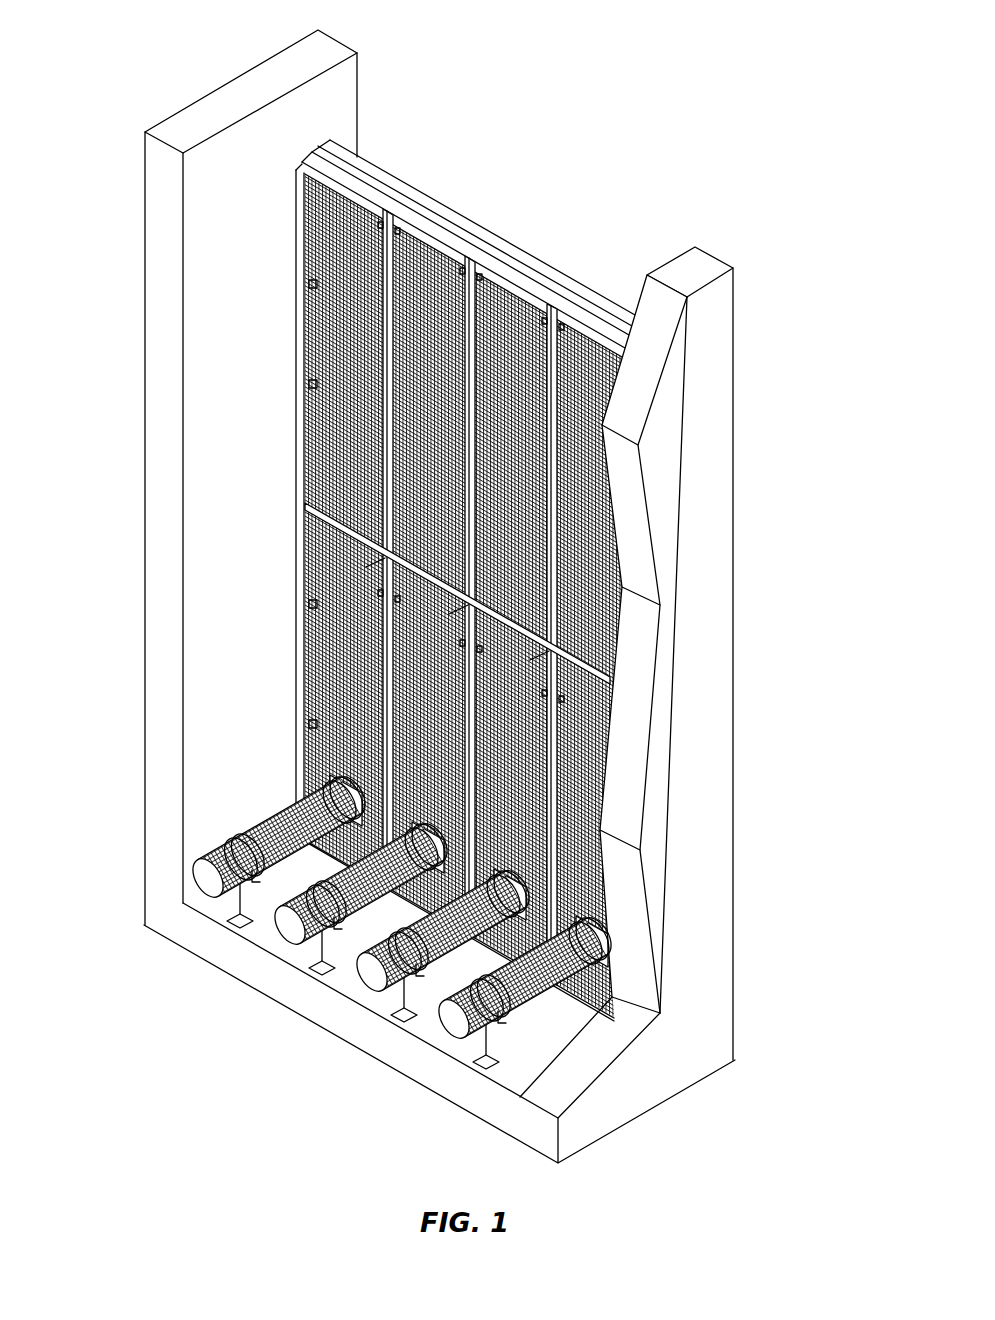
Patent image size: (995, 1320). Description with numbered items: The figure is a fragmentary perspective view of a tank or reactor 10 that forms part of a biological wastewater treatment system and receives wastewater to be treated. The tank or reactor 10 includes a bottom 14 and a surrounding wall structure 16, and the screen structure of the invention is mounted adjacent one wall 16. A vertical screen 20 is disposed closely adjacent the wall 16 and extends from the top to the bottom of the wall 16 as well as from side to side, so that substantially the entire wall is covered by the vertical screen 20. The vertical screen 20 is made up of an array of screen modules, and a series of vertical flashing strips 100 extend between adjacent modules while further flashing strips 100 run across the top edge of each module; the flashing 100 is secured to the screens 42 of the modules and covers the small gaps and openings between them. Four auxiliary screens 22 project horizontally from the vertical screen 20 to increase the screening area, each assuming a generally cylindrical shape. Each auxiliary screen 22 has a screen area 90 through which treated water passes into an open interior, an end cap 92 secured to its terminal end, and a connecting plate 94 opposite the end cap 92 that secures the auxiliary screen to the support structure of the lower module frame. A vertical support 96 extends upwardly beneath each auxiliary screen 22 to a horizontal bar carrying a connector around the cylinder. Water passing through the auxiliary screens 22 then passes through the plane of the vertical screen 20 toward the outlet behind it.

The tank or reactor 10 is at (652, 116).
The bottom 14 is at (267, 937).
The wall structure 16 is at (227, 275).
The vertical screen 20 is at (250, 435).
The auxiliary screen 22 is at (197, 912).
The screen 42 is at (338, 207).
The screen area 90 is at (277, 823).
The end cap 92 is at (202, 873).
The connecting plate 94 is at (328, 768).
The vertical support 96 is at (477, 1052).
The flashing 100 is at (585, 665).